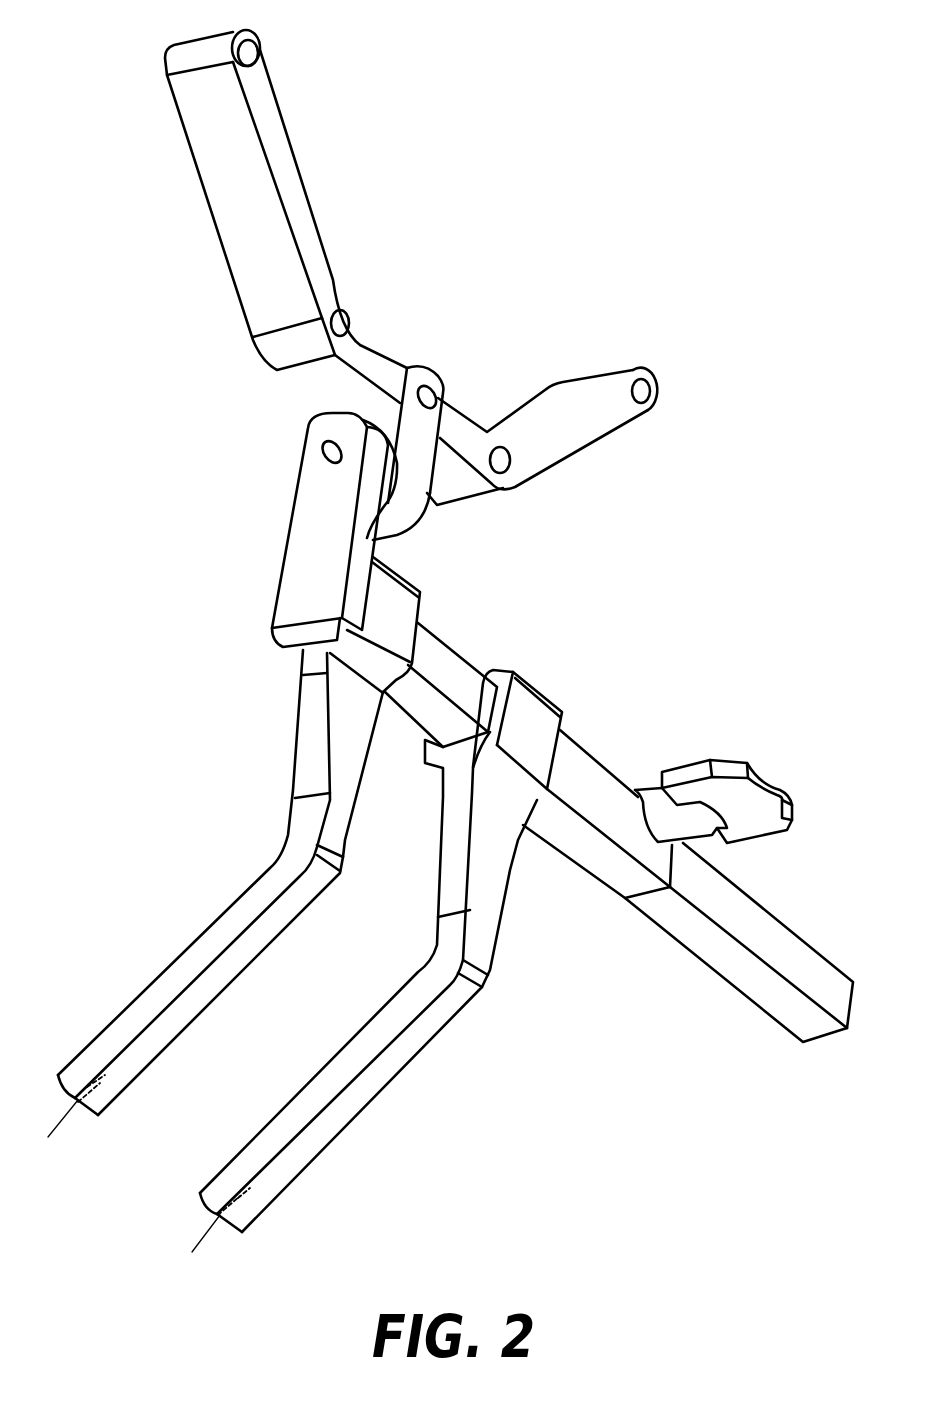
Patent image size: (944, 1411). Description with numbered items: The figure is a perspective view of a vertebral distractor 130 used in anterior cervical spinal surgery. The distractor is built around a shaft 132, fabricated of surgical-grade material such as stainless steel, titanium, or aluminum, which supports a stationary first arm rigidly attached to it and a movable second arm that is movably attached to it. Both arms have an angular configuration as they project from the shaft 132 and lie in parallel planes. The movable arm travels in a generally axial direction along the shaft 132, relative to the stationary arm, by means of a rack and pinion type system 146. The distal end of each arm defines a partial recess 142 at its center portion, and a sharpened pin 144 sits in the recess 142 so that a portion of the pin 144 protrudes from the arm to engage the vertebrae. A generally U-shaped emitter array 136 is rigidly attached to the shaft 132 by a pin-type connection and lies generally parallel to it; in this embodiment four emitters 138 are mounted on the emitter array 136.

The vertebral distractor 130 is at (153, 677).
The shaft 132 is at (777, 950).
The emitter array 136 is at (313, 244).
The emitter 138 is at (257, 52).
The partial recess 142 is at (242, 1200).
The pin 144 is at (210, 1233).
The rack and pinion type system 146 is at (728, 797).